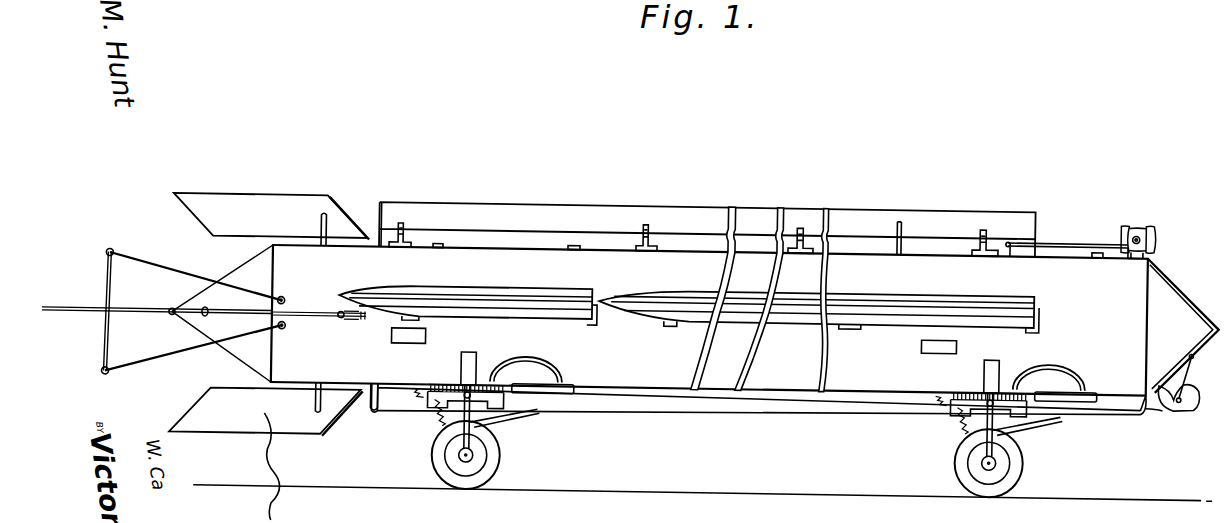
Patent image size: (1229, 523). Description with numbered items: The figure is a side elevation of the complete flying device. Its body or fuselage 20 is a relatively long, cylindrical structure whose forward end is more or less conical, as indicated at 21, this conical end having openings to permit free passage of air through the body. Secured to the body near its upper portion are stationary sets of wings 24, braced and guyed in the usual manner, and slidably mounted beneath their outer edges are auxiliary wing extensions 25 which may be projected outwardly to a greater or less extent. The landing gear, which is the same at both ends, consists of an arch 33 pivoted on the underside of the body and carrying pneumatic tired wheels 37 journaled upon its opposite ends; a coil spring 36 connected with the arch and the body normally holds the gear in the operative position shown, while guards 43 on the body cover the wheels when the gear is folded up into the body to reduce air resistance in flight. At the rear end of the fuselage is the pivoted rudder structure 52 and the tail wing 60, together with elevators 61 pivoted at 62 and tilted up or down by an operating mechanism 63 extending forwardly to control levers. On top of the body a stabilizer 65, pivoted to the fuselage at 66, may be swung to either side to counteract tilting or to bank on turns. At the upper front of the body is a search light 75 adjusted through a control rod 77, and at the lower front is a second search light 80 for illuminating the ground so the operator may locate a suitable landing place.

The body or fuselage 20 is at (688, 246).
The conical forward end 21 is at (1183, 326).
The wings 24 is at (573, 285).
The auxiliary wing extensions 25 is at (900, 312).
The arch 33 is at (473, 414).
The coil spring 36 is at (423, 425).
The pneumatic tired wheels 37 is at (493, 469).
The guards 43 is at (555, 364).
The rudder structure 52 is at (247, 208).
The tail wing 60 is at (233, 321).
The elevators 61 is at (60, 316).
The elevator pivot 62 is at (67, 313).
The operating mechanism 63 is at (143, 262).
The stabilizer 65 is at (878, 202).
The stabilizer pivot 66 is at (643, 234).
The search light 75 is at (1137, 224).
The control rod 77 is at (1070, 230).
The search light 80 is at (1190, 405).